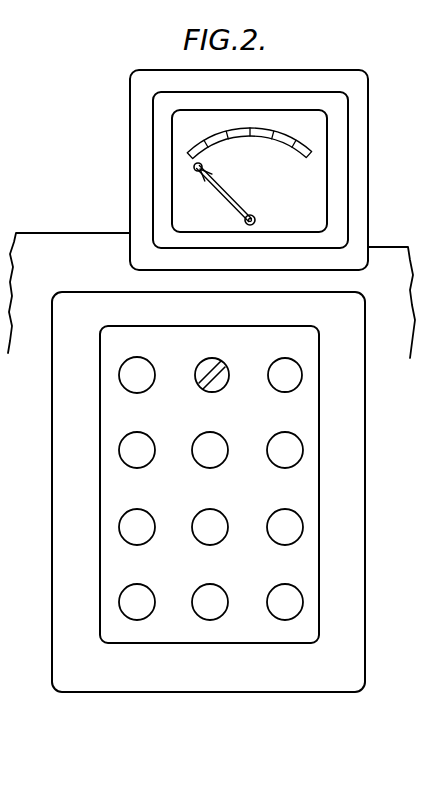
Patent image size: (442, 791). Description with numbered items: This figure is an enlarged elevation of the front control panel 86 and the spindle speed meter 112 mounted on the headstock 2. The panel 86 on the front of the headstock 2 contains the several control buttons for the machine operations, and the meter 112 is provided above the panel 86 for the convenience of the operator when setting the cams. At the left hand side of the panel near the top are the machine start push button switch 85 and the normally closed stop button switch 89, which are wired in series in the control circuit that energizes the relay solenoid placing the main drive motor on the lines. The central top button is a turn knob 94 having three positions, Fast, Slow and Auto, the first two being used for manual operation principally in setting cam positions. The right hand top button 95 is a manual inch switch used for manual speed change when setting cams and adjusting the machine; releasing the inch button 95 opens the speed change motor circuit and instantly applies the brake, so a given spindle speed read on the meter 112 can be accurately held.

The headstock 2 is at (50, 232).
The spindle speed meter 112 is at (177, 135).
The front control panel 86 is at (72, 416).
The machine start push button switch 85 is at (120, 372).
The stop button switch 89 is at (121, 452).
The turn knob 94 is at (218, 386).
The manual inch switch 95 is at (302, 377).